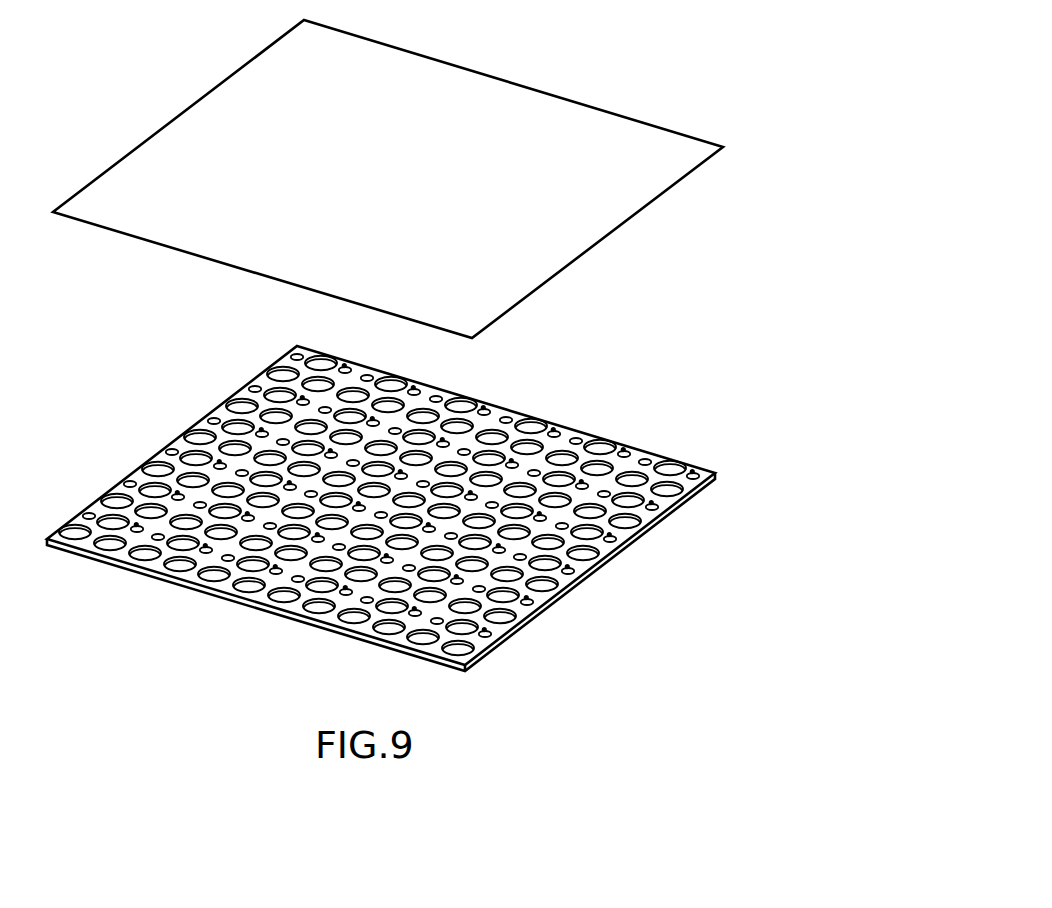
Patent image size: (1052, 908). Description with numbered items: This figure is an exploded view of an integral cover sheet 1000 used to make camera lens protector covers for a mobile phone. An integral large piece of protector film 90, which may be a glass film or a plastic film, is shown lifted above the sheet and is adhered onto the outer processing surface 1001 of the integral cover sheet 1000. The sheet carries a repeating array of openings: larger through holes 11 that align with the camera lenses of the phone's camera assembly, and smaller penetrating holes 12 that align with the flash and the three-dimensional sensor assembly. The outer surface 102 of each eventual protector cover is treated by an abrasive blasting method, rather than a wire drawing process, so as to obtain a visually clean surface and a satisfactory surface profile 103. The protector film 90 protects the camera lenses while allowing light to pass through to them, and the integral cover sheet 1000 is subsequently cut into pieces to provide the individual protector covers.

The protector film 90 is at (572, 133).
The integral cover sheet 1000 is at (672, 507).
The outer processing surface 1001 is at (558, 444).
The through hole 11 is at (512, 580).
The outer surface 102 is at (558, 584).
The penetrating hole 12 is at (527, 556).
The surface profile 103 is at (553, 588).